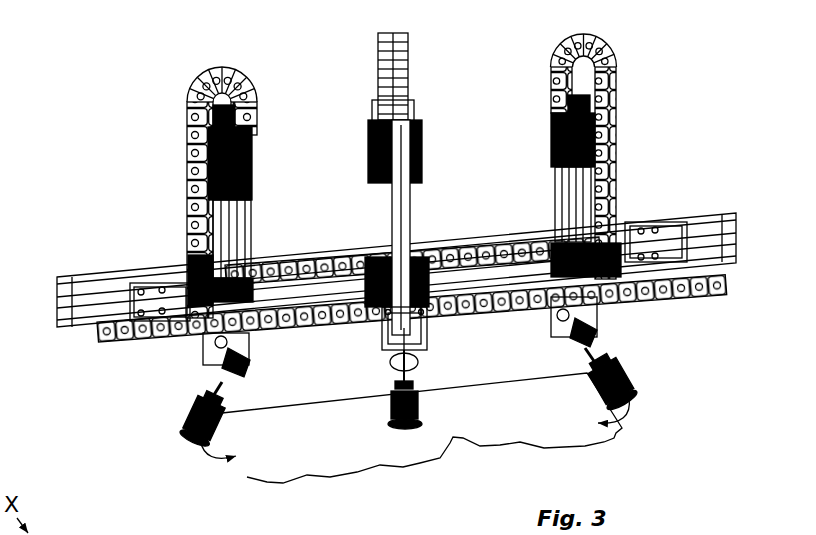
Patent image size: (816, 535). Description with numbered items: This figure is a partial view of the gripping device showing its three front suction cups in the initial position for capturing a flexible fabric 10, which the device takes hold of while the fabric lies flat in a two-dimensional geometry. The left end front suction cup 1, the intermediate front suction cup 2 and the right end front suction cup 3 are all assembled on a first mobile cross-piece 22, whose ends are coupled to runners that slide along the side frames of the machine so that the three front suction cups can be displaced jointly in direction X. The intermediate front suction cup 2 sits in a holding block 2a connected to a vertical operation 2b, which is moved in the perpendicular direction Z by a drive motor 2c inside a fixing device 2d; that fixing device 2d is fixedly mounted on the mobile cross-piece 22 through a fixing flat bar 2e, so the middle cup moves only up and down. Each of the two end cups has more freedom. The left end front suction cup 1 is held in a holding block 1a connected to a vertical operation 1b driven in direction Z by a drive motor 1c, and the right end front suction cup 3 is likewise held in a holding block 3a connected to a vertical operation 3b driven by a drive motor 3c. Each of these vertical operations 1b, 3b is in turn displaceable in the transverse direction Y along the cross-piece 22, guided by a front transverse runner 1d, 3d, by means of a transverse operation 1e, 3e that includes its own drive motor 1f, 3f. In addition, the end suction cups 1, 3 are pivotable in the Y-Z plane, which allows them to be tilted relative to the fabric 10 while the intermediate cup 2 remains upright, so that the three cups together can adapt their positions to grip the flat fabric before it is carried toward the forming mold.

The left end front suction cup 1 is at (619, 370).
The holding block 1a is at (572, 308).
The vertical operation 1b is at (533, 165).
The drive motor 1c is at (572, 80).
The front transverse runner 1d is at (591, 253).
The transverse operation 1e is at (651, 300).
The drive motor 1f is at (669, 243).
The intermediate front suction cup 2 is at (420, 400).
The holding block 2a is at (380, 333).
The vertical operation 2b is at (418, 203).
The drive motor 2c is at (403, 108).
The fixing device 2d is at (419, 293).
The fixing flat bar 2e is at (372, 277).
The right end front suction cup 3 is at (182, 422).
The holding block 3a is at (243, 343).
The vertical operation 3b is at (253, 200).
The drive motor 3c is at (233, 140).
The front transverse runner 3d is at (188, 280).
The transverse operation 3e is at (175, 352).
The drive motor 3f is at (133, 278).
The flexible fabric 10 is at (253, 453).
The first mobile cross-piece 22 is at (93, 277).